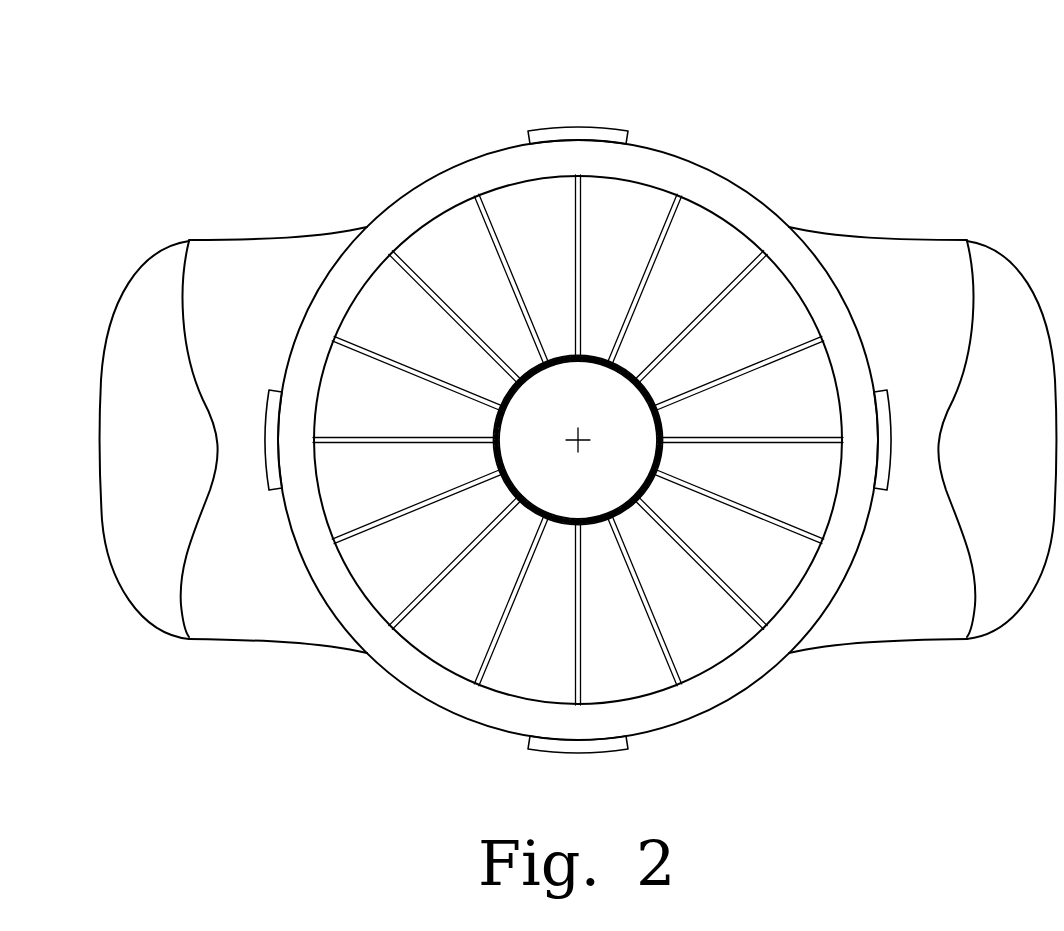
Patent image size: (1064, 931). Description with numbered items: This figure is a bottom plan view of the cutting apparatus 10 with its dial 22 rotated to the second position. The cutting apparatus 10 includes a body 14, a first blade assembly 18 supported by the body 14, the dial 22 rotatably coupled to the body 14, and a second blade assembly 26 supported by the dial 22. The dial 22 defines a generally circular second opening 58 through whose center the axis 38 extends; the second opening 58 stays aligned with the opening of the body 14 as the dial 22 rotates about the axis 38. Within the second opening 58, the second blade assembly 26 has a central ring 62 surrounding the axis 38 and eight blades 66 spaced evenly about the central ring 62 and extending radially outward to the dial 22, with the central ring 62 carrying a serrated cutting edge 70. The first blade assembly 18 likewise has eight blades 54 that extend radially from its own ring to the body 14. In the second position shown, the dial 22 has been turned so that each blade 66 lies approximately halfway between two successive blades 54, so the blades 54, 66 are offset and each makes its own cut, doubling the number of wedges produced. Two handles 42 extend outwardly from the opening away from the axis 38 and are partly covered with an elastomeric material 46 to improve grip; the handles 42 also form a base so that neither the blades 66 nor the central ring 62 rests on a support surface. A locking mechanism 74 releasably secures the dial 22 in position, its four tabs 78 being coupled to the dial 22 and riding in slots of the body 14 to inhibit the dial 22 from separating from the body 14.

The cutting apparatus 10 is at (866, 120).
The body 14 is at (578, 432).
The first blade assembly 18 is at (578, 440).
The dial 22 is at (578, 439).
The second blade assembly 26 is at (565, 396).
The axis 38 is at (581, 437).
The handles 42 is at (224, 246).
The elastomeric material 46 is at (150, 272).
The blades 54 is at (440, 377).
The second opening 58 is at (733, 230).
The central ring 62 is at (522, 390).
The blades 66 is at (428, 278).
The serrated cutting edge 70 is at (545, 509).
The locking mechanism 74 is at (580, 424).
The tabs 78 is at (608, 130).